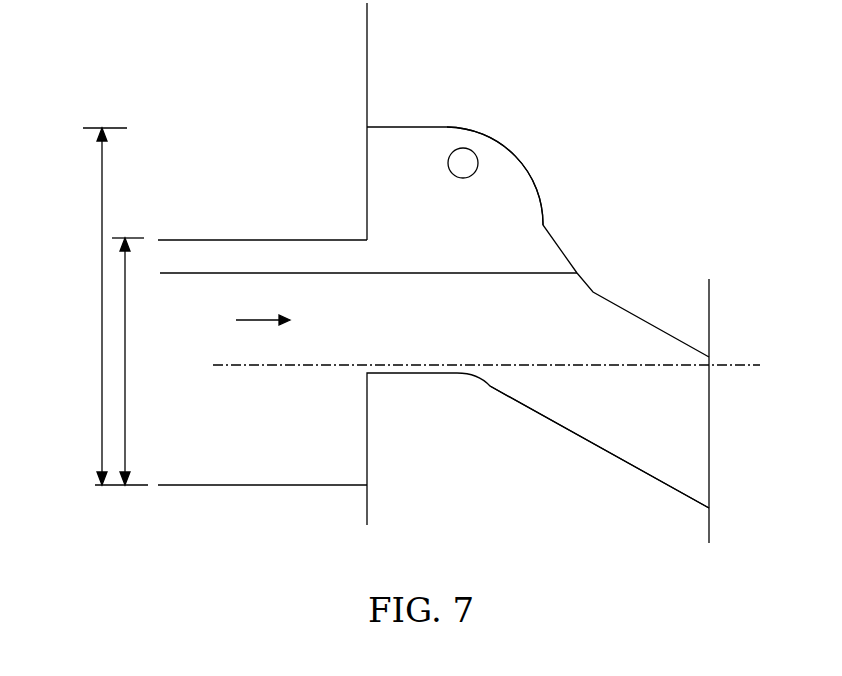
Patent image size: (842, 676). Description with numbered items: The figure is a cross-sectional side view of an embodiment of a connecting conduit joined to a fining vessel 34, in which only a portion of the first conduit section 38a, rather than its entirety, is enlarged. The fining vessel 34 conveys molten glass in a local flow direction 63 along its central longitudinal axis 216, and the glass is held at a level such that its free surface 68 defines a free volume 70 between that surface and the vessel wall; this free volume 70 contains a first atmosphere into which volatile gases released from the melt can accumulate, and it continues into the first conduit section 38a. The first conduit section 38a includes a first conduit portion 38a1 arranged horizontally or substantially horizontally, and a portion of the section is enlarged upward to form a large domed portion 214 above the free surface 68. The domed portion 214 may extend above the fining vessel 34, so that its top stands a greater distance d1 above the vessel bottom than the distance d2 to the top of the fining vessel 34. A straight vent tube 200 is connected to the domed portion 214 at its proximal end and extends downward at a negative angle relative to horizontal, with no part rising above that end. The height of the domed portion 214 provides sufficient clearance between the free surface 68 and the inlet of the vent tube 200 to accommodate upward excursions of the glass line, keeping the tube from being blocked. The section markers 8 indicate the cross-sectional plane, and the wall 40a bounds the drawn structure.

The wall 40a is at (366, 115).
The fining vessel 34 is at (265, 240).
The free volume 70 is at (321, 265).
The domed portion 214 is at (490, 135).
The vent tube 200 is at (448, 163).
The free surface 68 is at (405, 273).
The central longitudinal axis 216 is at (288, 370).
The direction 63 is at (263, 332).
The first conduit section 38a is at (534, 444).
The first conduit portion 38a1 is at (608, 452).
The section line 8 is at (723, 297).
The distance d1 is at (110, 306).
The distance d2 is at (136, 361).